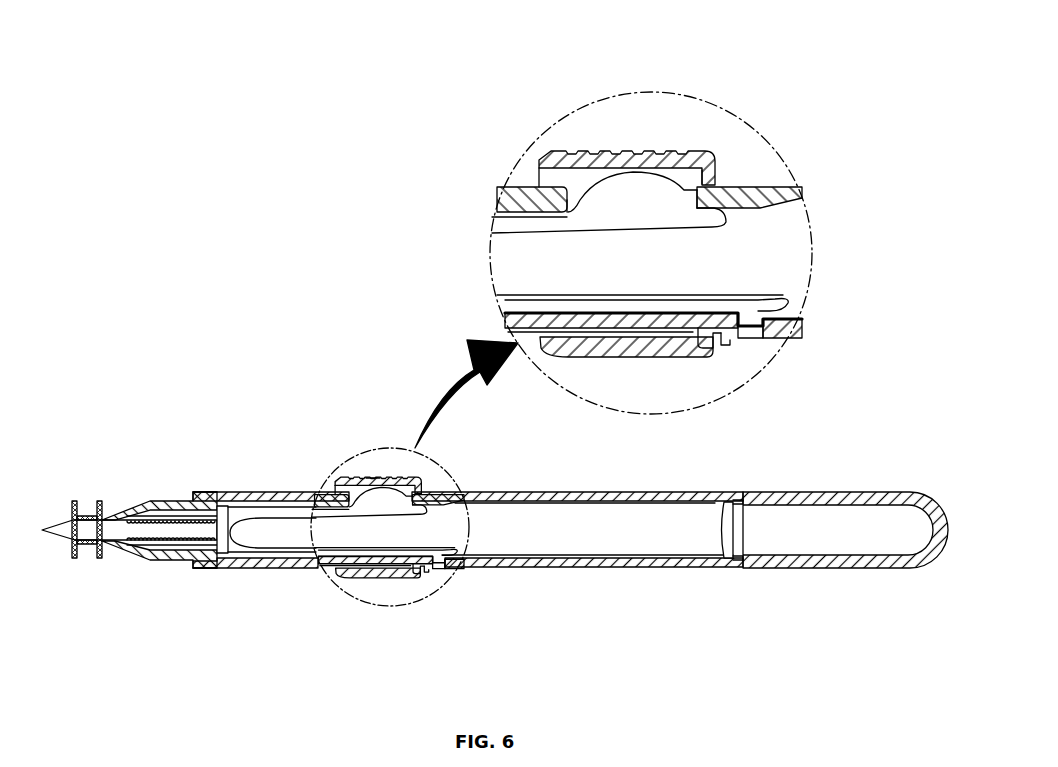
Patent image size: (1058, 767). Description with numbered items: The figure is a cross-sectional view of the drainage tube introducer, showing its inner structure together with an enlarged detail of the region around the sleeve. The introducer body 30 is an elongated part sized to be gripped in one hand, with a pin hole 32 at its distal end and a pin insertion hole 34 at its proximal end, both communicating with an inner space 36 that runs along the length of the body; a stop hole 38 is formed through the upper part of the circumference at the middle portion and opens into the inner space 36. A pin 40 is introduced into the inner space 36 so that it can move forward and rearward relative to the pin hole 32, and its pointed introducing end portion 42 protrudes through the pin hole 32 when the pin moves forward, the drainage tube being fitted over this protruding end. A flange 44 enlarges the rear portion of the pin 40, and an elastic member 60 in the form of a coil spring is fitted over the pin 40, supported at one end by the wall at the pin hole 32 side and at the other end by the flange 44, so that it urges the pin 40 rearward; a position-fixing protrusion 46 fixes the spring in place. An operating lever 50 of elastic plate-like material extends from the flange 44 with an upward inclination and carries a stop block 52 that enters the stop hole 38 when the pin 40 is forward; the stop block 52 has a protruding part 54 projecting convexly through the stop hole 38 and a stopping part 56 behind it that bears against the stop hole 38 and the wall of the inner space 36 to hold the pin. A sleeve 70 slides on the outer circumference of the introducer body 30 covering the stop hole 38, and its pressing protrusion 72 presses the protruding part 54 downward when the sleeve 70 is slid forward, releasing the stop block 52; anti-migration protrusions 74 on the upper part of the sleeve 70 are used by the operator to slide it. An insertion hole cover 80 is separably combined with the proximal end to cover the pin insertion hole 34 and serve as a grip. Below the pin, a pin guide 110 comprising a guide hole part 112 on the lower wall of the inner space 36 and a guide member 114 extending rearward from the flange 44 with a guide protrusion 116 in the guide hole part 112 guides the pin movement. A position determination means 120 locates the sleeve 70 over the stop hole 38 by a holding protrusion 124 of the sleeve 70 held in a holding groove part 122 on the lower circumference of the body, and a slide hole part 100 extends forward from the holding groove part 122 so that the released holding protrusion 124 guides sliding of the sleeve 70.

The introducer body 30 is at (529, 493).
The pin hole 32 is at (112, 519).
The pin insertion hole 34 is at (708, 516).
The inner space 36 is at (789, 233).
The stop hole 38 is at (581, 200).
The pin 40 is at (123, 541).
The introducing end portion 42 is at (78, 535).
The flange 44 is at (222, 506).
The position-fixing protrusion 46 is at (205, 503).
The operating lever 50 is at (290, 508).
The stop block 52 is at (394, 482).
The protruding part 54 is at (634, 186).
The stopping part 56 is at (704, 199).
The elastic member 60 is at (166, 546).
The sleeve 70 is at (546, 162).
The pressing protrusion 72 is at (699, 178).
The anti-migration protrusions 74 is at (371, 476).
The insertion hole cover 80 is at (858, 500).
The slide hole part 100 is at (633, 342).
The pin guide 110 is at (866, 280).
The guide hole part 112 is at (791, 326).
The guide member 114 is at (757, 300).
The guide protrusion 116 is at (757, 335).
The position determination means 120 is at (732, 432).
The holding groove part 122 is at (699, 332).
The holding protrusion 124 is at (710, 340).